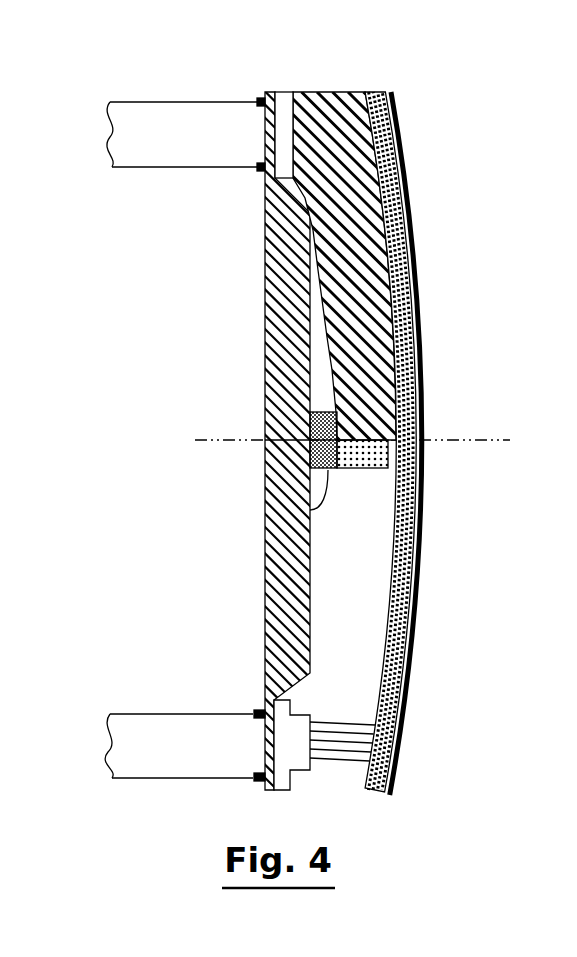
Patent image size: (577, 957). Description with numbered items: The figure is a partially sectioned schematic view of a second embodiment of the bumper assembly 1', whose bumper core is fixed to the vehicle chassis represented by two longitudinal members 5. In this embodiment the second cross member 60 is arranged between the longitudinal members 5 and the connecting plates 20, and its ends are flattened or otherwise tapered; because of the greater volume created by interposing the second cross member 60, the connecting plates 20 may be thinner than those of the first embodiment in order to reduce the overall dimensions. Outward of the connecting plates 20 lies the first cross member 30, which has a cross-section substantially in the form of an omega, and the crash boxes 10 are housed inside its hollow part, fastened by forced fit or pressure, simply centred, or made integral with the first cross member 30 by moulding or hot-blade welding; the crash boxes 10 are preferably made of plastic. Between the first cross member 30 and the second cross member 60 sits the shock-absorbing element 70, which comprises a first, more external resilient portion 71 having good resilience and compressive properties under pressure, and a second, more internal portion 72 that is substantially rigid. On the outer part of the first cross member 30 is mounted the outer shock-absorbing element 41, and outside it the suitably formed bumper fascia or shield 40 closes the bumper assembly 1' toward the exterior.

The bumper assembly 1' is at (496, 740).
The longitudinal members 5 is at (188, 158).
The crash boxes 10 is at (333, 716).
The connecting plates 20 is at (287, 105).
The first cross member 30 is at (345, 120).
The bumper shield 40 is at (415, 233).
The outer shock-absorbing element 41 is at (398, 130).
The second cross member 60 is at (265, 100).
The shock-absorbing element 70 is at (349, 500).
The first portion 71 is at (362, 468).
The second portion 72 is at (285, 495).